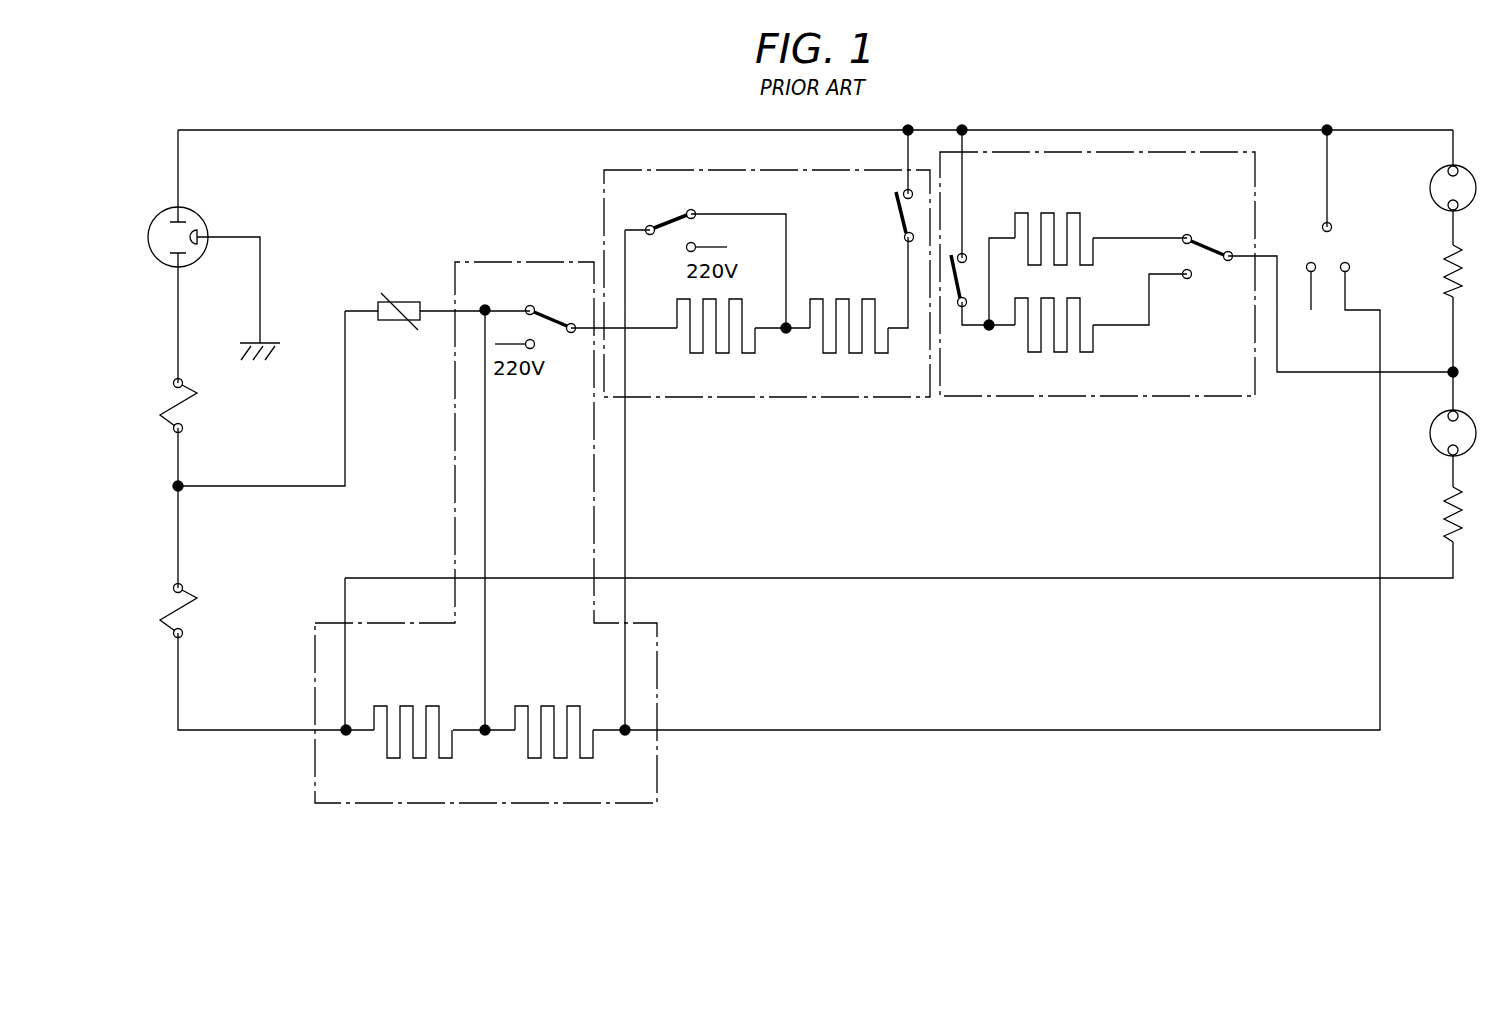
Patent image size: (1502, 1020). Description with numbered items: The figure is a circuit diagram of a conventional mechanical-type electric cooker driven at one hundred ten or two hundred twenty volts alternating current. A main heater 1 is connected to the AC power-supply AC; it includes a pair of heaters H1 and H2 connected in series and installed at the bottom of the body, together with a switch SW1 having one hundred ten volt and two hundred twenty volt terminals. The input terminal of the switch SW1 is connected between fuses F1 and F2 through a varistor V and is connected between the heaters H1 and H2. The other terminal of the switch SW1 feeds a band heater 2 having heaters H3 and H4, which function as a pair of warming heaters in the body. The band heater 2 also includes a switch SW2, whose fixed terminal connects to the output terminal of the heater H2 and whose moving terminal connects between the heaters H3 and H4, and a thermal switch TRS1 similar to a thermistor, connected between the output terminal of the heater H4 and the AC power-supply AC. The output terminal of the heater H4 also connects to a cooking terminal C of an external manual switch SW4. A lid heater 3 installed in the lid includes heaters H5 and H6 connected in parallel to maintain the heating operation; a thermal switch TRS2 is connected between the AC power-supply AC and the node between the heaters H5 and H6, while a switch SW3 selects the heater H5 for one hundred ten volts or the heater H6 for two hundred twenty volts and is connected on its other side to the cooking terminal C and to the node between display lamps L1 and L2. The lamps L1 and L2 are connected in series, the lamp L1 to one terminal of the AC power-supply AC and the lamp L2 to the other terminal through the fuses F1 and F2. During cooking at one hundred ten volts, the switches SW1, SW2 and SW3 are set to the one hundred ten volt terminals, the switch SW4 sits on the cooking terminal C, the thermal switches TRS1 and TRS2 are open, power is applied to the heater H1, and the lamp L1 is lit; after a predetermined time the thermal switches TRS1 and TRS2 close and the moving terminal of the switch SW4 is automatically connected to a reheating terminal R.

The main heater 1 is at (463, 803).
The band heater 2 is at (733, 397).
The lid heater 3 is at (1070, 396).
The AC power-supply AC is at (197, 283).
The fuse F1 is at (165, 406).
The fuse F2 is at (165, 611).
The varistor V is at (399, 323).
The switch SW1 is at (552, 306).
The switch SW2 is at (671, 210).
The switch SW3 is at (1208, 245).
The external manual switch SW4 is at (1352, 218).
The thermal switch TRS1 is at (897, 213).
The thermal switch TRS2 is at (955, 283).
The heater H1 is at (413, 718).
The heater H2 is at (554, 718).
The heater H3 is at (716, 342).
The heater H4 is at (849, 342).
The heater H5 is at (1054, 224).
The heater H6 is at (1054, 340).
The cooking display lamp L1 is at (1462, 231).
The warming display lamp L2 is at (1462, 476).
The reheating terminal R is at (1303, 270).
The cooking terminal C is at (1353, 270).